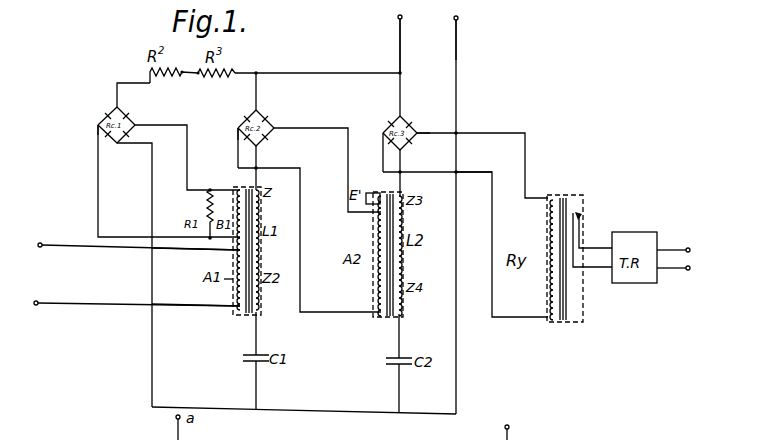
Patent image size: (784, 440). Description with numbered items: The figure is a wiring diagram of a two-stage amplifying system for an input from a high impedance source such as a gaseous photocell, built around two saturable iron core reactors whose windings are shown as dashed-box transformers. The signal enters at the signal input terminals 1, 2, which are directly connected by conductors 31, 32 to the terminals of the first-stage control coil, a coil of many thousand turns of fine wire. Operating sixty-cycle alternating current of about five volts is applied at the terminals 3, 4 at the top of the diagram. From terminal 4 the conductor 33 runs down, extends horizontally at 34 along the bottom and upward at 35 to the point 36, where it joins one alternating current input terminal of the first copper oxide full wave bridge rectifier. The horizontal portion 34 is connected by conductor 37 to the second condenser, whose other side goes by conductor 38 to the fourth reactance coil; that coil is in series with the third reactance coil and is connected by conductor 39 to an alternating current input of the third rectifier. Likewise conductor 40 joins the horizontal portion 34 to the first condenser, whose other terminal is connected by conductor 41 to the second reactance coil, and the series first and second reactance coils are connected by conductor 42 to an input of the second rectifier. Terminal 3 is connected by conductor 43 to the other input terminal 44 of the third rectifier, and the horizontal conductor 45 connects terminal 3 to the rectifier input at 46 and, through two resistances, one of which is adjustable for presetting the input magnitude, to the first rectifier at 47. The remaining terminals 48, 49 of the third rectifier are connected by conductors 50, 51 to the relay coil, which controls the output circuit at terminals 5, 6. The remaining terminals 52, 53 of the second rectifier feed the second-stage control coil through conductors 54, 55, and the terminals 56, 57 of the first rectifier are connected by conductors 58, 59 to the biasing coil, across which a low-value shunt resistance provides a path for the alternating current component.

The signal input terminal 1 is at (131, 244).
The signal input terminal 2 is at (127, 305).
The energizing terminal 3 is at (408, 39).
The energizing terminal 4 is at (464, 32).
The output circuit terminal 5 is at (682, 249).
The output circuit terminal 6 is at (682, 269).
The conductor 31 is at (161, 251).
The conductor 32 is at (163, 299).
The conductor 33 is at (459, 107).
The horizontal conductor portion 34 is at (360, 413).
The upward conductor portion 35 is at (151, 366).
The alternating current input terminal of rectifier 36 is at (117, 143).
The conductor 37 is at (400, 393).
The conductor 38 is at (400, 348).
The conductor 39 is at (404, 157).
The conductor 40 is at (262, 386).
The conductor 41 is at (258, 345).
The conductor 42 is at (257, 157).
The conductor 43 is at (403, 64).
The alternating current input terminal of rectifier Rc-3 44 is at (409, 122).
The horizontal conductor 45 is at (307, 73).
The alternating current input terminal of rectifier 46 is at (249, 116).
The rectifier connection point 47 is at (111, 113).
The rectifier output terminal 48 is at (386, 122).
The rectifier output terminal 49 is at (419, 131).
The conductor 50 is at (478, 177).
The conductor 51 is at (502, 128).
The rectifier output terminal 52 is at (239, 127).
The rectifier output terminal 53 is at (266, 123).
The conductor 54 is at (297, 169).
The conductor 55 is at (337, 131).
The rectifier output terminal 56 is at (98, 125).
The rectifier output terminal 57 is at (128, 118).
The conductor 58 is at (98, 207).
The conductor 59 is at (187, 170).